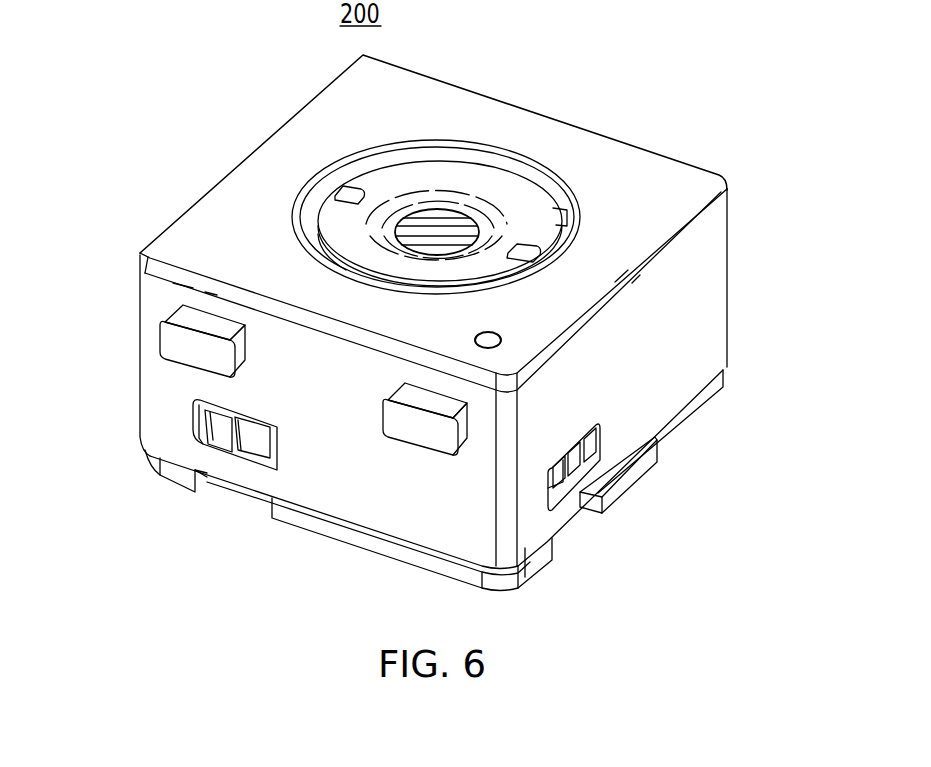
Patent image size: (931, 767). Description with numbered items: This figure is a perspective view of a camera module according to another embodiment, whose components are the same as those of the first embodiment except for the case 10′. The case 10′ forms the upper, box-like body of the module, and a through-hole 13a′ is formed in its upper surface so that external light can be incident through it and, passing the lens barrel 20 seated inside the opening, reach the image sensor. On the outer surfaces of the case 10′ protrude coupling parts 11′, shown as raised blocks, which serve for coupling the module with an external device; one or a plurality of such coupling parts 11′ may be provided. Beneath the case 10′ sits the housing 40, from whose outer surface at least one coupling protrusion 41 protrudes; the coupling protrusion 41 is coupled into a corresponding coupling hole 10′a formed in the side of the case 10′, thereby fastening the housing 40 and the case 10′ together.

The case 10′ is at (655, 163).
The through-hole 13a′ is at (463, 145).
The lens barrel 20 is at (487, 183).
The coupling part 11′ is at (195, 352).
The coupling hole 10′a is at (600, 425).
The housing 40 is at (708, 400).
The coupling protrusion 41 is at (582, 460).